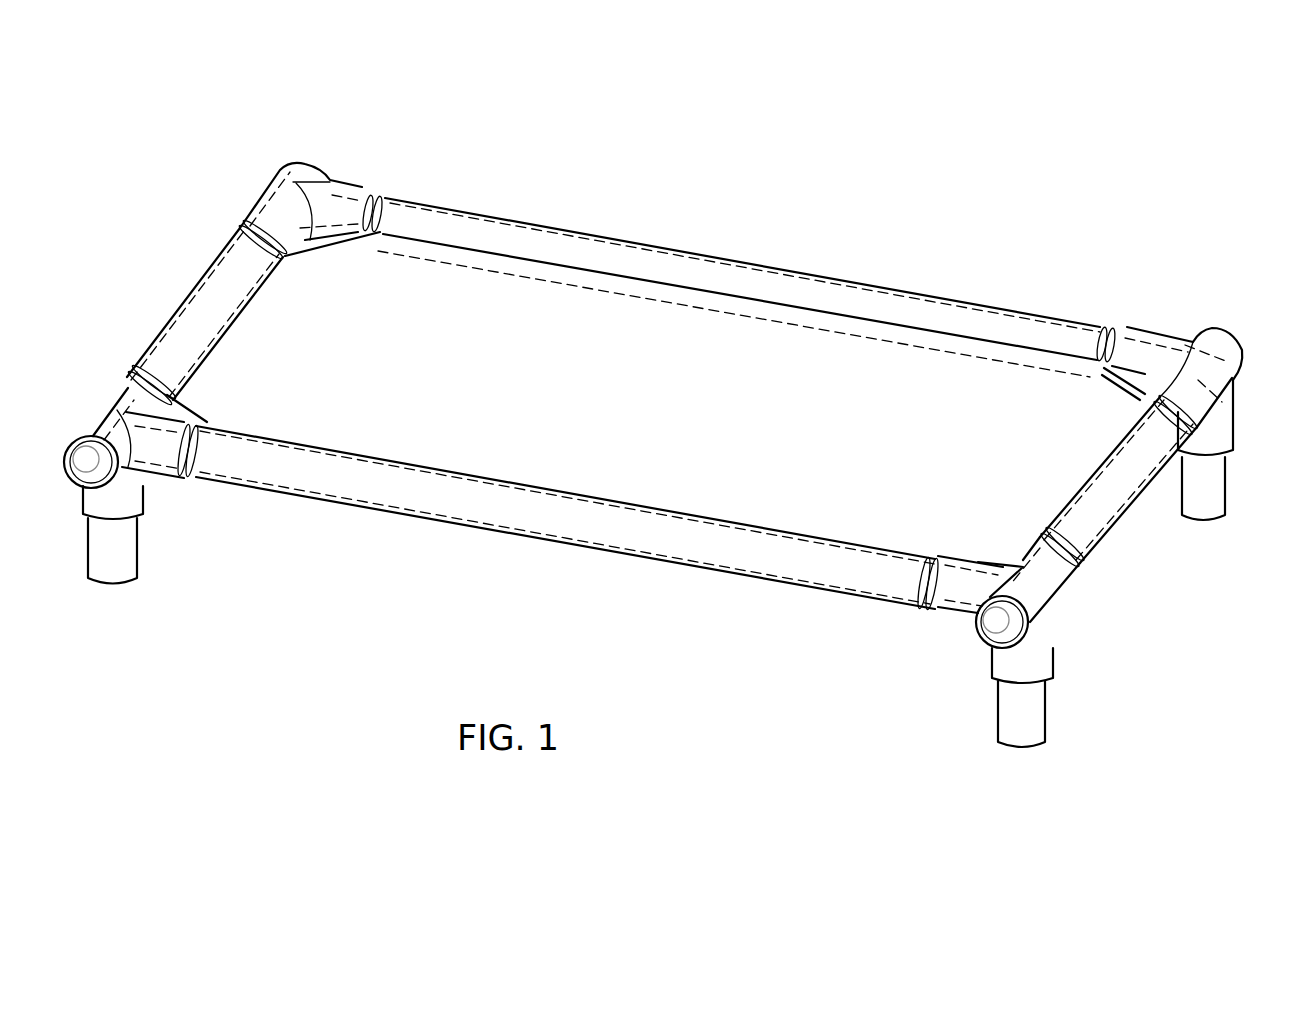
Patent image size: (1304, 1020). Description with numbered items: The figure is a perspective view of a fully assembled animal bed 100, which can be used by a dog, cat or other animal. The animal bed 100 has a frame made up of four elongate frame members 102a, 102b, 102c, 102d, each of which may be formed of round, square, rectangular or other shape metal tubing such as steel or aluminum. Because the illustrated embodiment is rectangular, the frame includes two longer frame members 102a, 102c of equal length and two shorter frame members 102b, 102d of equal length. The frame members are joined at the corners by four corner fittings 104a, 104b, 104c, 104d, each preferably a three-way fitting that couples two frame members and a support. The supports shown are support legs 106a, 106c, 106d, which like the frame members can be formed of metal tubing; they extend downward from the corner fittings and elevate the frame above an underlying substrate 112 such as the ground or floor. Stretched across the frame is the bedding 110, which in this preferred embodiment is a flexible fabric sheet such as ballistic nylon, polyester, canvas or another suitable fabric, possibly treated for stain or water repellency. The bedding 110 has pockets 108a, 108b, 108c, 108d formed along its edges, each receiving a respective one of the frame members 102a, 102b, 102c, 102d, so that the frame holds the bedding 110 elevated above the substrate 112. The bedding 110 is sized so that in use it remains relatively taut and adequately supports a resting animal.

The animal bed 100 is at (639, 438).
The frame member 102a is at (112, 393).
The frame member 102b is at (353, 193).
The frame member 102c is at (1076, 594).
The frame member 102d is at (956, 618).
The corner fitting 104a is at (100, 418).
The corner fitting 104b is at (321, 180).
The corner fitting 104c is at (1161, 455).
The corner fitting 104d is at (992, 603).
The support leg 106a is at (124, 584).
The support leg 106c is at (1212, 515).
The support leg 106d is at (1034, 746).
The pocket 108a is at (195, 322).
The pocket 108b is at (748, 265).
The pocket 108c is at (1095, 483).
The pocket 108d is at (612, 540).
The bedding 110 is at (701, 425).
The underlying substrate 112 is at (343, 585).